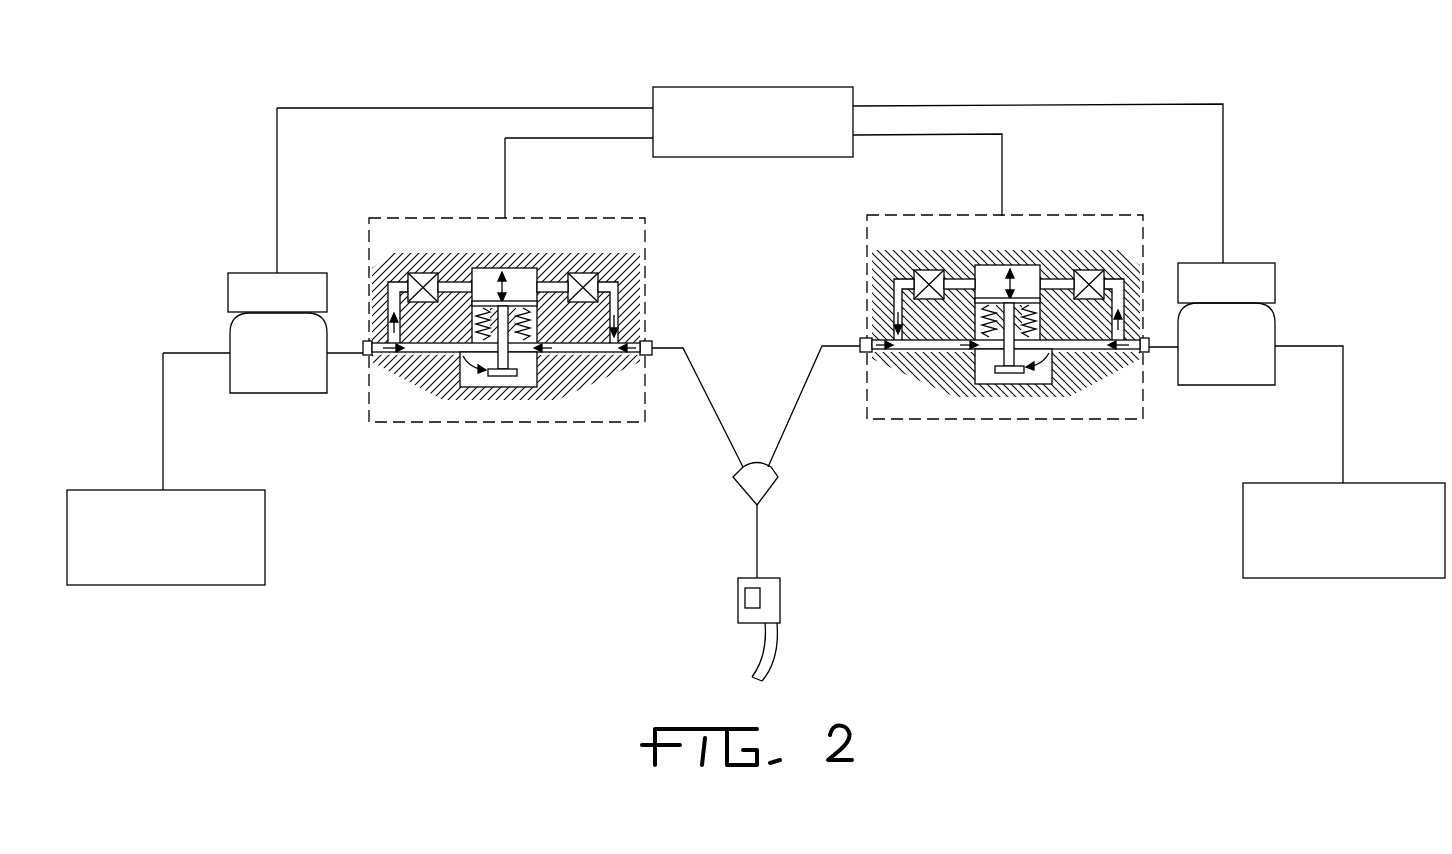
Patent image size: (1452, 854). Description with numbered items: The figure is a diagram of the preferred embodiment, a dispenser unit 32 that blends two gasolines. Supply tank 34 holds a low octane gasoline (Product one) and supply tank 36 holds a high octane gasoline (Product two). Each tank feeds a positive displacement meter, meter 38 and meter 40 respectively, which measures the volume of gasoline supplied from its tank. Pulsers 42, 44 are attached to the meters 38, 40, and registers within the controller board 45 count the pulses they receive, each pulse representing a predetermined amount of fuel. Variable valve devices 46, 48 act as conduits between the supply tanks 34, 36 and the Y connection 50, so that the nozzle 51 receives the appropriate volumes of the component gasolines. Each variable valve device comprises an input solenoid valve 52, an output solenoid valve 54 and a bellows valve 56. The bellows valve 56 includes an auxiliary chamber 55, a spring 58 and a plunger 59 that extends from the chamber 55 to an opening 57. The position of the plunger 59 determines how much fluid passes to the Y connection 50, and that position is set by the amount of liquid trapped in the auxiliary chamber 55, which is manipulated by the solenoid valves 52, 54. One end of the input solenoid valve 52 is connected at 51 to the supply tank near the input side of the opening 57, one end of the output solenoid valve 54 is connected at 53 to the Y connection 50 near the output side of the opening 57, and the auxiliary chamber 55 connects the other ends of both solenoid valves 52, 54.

The dispenser unit 32 is at (324, 89).
The supply tank 34 is at (113, 490).
The supply tank 36 is at (1387, 483).
The meter 38 is at (262, 364).
The meter 40 is at (1212, 359).
The pulser 42 is at (262, 301).
The pulser 44 is at (1212, 294).
The controller board 45 is at (693, 87).
The variable valve device 46 is at (425, 218).
The variable valve device 48 is at (1085, 215).
The Y connection 50 is at (748, 487).
The nozzle / input-side connection 51 is at (376, 312).
The input solenoid valve 52 is at (423, 273).
The output-side connection 53 is at (645, 295).
The output solenoid valve 54 is at (583, 272).
The auxiliary chamber 55 is at (480, 268).
The bellows valve 56 is at (434, 369).
The opening 57 is at (522, 368).
The spring 58 is at (495, 312).
The plunger 59 is at (538, 290).